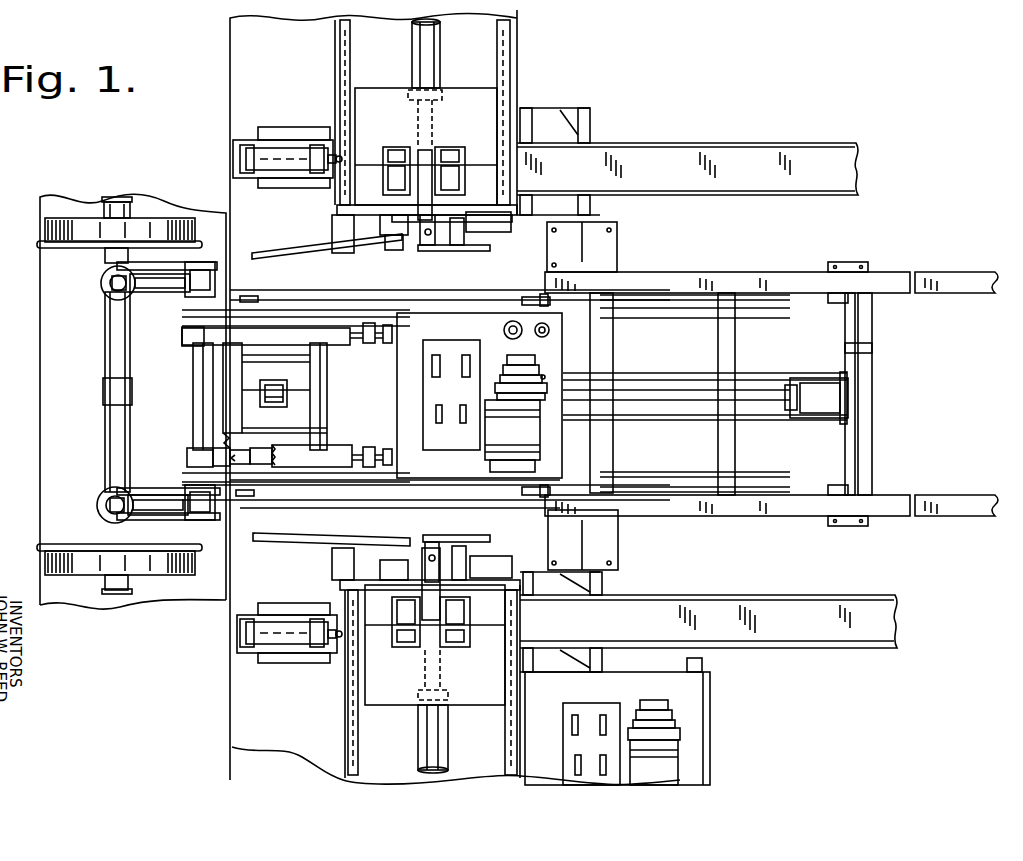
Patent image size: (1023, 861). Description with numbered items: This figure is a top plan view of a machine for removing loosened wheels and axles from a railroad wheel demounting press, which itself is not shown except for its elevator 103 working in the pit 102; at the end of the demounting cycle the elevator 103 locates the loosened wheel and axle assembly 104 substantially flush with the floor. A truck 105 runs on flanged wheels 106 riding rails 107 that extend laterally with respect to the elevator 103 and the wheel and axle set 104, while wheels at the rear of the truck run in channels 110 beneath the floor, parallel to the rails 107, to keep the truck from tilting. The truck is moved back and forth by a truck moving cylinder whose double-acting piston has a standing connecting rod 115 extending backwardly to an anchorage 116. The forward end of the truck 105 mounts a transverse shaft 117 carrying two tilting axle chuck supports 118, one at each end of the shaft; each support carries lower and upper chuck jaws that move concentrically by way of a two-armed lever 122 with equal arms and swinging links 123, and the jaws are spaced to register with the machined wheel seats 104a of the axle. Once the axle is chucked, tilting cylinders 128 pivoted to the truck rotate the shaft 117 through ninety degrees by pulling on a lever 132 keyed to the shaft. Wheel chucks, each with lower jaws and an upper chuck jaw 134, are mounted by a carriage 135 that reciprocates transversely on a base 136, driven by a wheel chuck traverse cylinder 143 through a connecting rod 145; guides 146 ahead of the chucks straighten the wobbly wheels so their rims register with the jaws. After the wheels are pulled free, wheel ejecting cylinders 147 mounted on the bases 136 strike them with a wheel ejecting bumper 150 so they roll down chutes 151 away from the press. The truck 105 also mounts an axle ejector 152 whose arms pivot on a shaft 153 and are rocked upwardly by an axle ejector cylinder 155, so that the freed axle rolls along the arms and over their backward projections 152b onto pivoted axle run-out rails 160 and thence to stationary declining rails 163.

The pit 102 is at (238, 690).
The elevator 103 is at (66, 604).
The wheel and axle assembly 104 is at (95, 410).
The wheel seats 104a is at (93, 528).
The truck 105 is at (350, 488).
The wheels 106 is at (250, 294).
The rails 107 is at (483, 296).
The channels 110 is at (665, 422).
The connecting rod 115 is at (690, 387).
The anchorage 116 is at (795, 385).
The transverse shaft 117 is at (197, 394).
The tilting axle chuck support 118 is at (167, 258).
The two-armed lever 122 is at (113, 291).
The swinging link 123 is at (170, 293).
The tilting cylinders 128 is at (362, 346).
The lever 132 is at (222, 434).
The upper chuck jaw 134 is at (428, 243).
The carriage 135 is at (478, 104).
The base 136 is at (495, 37).
The wheel chuck traverse cylinder 143 is at (436, 42).
The connecting rod 145 is at (436, 118).
The guides 146 is at (303, 246).
The wheel ejecting cylinders 147 is at (270, 128).
The wheel ejecting bumper 150 is at (327, 148).
The chutes 151 is at (824, 152).
The axle ejector 152 is at (275, 345).
The backward projections 152b is at (340, 445).
The shaft 153 is at (326, 343).
The axle ejector cylinder 155 is at (265, 404).
The axle run-out rails 160 is at (706, 282).
The stationary declining rails 163 is at (955, 284).